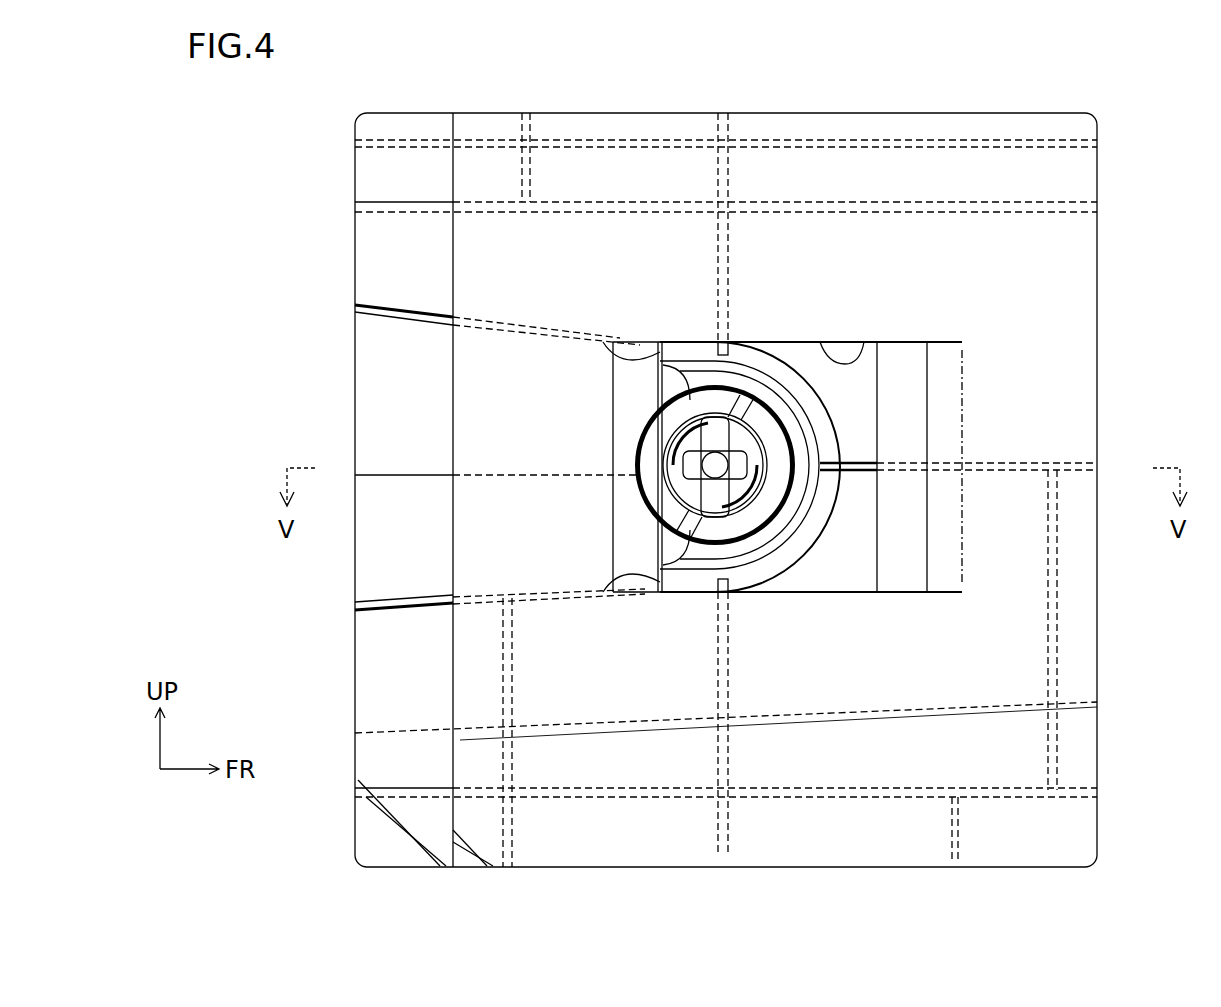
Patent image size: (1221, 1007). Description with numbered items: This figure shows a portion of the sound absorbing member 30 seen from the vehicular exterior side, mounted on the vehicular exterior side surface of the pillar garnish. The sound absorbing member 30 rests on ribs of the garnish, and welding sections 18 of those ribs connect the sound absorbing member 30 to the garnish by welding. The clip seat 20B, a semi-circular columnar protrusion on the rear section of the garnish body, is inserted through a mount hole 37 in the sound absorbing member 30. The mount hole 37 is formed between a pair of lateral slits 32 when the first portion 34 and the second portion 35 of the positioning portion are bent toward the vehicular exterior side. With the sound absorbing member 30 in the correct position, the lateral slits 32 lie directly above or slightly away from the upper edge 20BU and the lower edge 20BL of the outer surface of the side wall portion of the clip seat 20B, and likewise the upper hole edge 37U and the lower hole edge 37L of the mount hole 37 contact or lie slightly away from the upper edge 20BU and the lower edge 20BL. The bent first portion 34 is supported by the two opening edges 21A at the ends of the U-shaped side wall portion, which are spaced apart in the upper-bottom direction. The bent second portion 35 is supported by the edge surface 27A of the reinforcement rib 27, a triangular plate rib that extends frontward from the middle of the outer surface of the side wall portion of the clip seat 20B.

The sound absorbing member 30 is at (556, 232).
The opening edges 21A is at (642, 352).
The welding sections 18 is at (718, 192).
The upper edge 20BU is at (753, 342).
The lower edge 20BL is at (743, 592).
The clip seat 20B is at (783, 342).
The mount hole 37 is at (850, 342).
The upper hole edge 37U is at (868, 342).
The lower hole edge 37L is at (853, 592).
The lateral slits 32 is at (945, 342).
The reinforcement rib 27 is at (848, 455).
The second portion 35 is at (955, 432).
The edge surface 27A is at (903, 465).
The first portion 34 is at (627, 385).